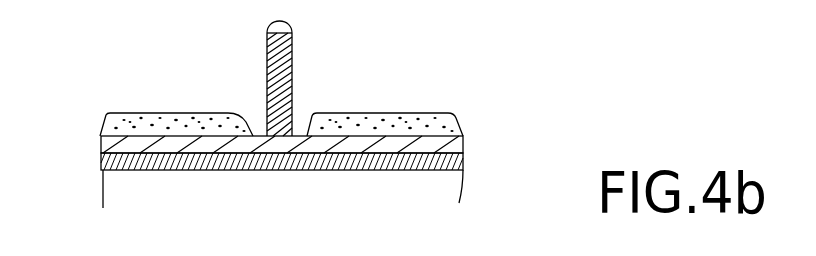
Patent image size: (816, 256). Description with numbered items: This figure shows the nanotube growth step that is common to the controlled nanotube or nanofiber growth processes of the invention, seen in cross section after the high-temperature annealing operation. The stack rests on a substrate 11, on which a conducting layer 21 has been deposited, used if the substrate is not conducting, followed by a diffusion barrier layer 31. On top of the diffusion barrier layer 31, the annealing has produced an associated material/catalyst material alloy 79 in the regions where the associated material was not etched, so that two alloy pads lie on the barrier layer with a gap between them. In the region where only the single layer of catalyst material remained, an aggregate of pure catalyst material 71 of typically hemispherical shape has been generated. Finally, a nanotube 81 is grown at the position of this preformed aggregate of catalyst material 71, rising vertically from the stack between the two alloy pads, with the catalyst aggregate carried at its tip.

The substrate 11 is at (134, 192).
The conducting layer 21 is at (136, 169).
The diffusion barrier layer 31 is at (123, 143).
The catalyst material 71 is at (288, 24).
The associated material/catalyst material alloy 79 is at (444, 112).
The nanotubes 81 is at (284, 82).